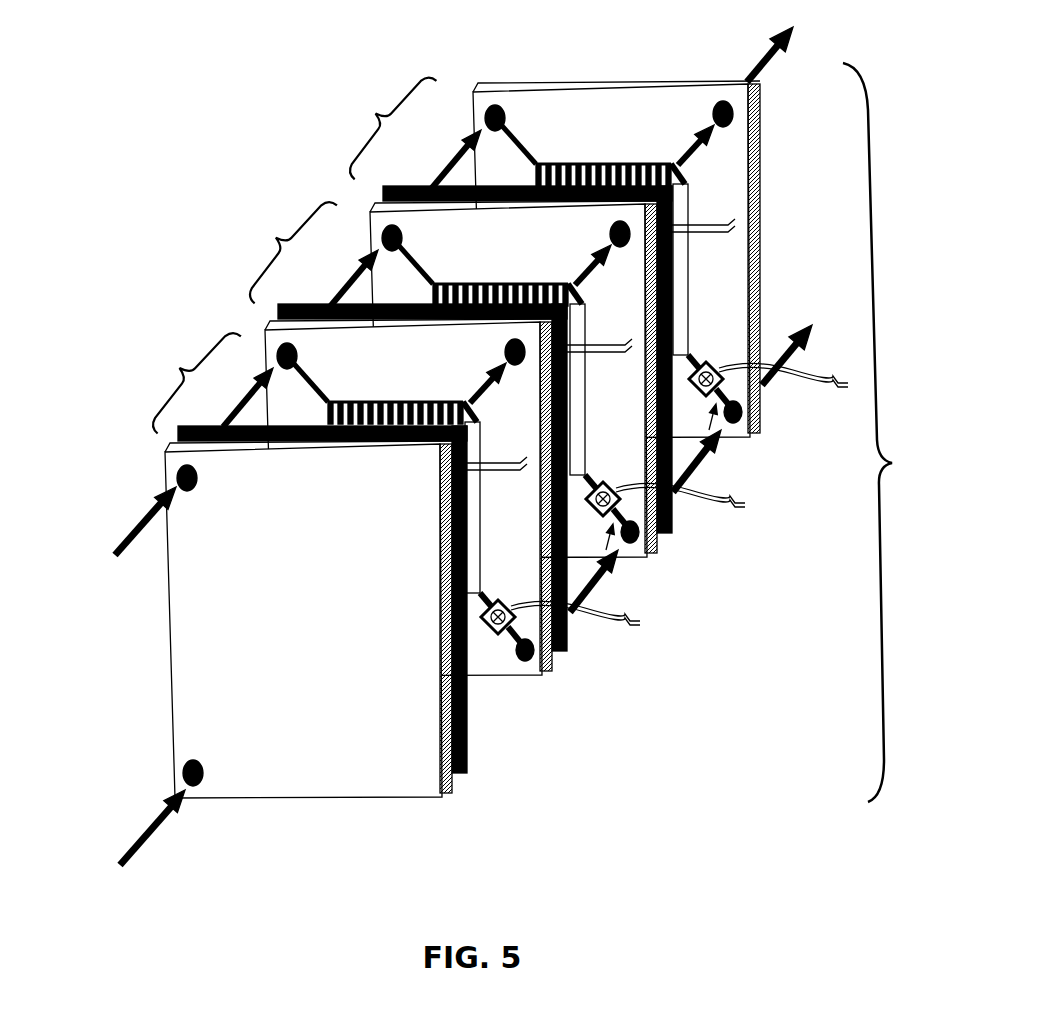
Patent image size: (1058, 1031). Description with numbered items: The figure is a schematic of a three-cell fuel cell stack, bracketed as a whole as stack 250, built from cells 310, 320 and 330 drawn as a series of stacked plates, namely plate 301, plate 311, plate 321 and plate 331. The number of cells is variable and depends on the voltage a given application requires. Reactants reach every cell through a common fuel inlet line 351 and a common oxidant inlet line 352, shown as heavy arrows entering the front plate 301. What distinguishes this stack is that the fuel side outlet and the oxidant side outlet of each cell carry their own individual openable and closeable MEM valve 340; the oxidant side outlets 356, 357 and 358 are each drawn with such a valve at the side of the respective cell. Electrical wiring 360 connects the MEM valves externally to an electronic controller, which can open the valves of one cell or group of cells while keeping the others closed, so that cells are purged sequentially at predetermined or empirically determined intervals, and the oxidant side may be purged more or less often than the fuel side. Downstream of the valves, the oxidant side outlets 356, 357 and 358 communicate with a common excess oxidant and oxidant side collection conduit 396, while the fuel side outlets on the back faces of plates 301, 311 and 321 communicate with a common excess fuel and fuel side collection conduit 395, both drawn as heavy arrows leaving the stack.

The stacked optical assembly 250 is at (889, 432).
The plate 301 is at (316, 612).
The cell 310 is at (189, 376).
The plate 311 is at (395, 490).
The cell 320 is at (284, 246).
The plate 321 is at (536, 399).
The cell 330 is at (385, 121).
The fourth substrate plate 331 is at (639, 286).
The MEM valve 340 is at (486, 638).
The common fuel inlet line 351 is at (140, 836).
The common oxidant inlet line 352 is at (135, 530).
The oxidant side outlet 356 is at (505, 643).
The oxidant side outlet 357 is at (614, 555).
The oxidant side outlet 358 is at (735, 438).
The electrical wiring 360 is at (617, 617).
The common excess fuel and fuel side collection conduit 395 is at (757, 60).
The common excess oxidant and oxidant side collection conduit 396 is at (787, 336).